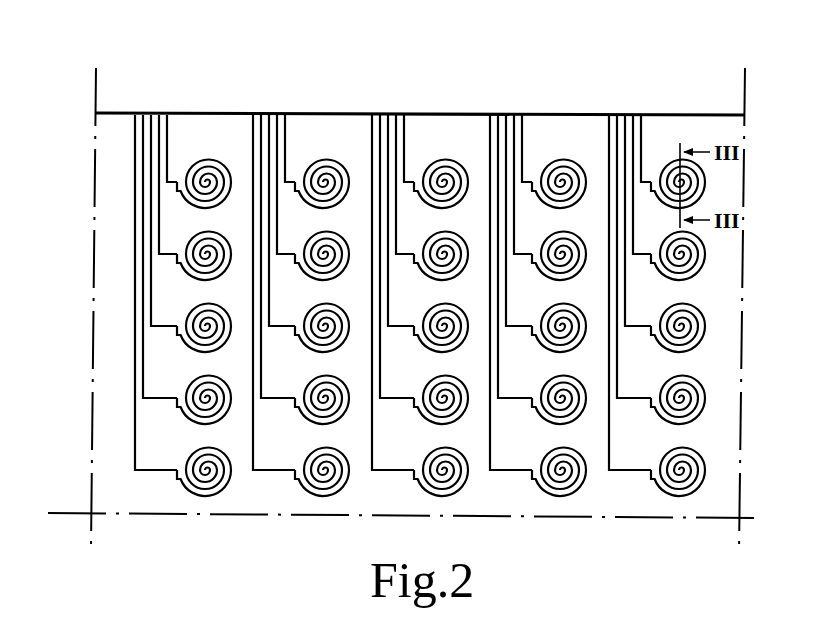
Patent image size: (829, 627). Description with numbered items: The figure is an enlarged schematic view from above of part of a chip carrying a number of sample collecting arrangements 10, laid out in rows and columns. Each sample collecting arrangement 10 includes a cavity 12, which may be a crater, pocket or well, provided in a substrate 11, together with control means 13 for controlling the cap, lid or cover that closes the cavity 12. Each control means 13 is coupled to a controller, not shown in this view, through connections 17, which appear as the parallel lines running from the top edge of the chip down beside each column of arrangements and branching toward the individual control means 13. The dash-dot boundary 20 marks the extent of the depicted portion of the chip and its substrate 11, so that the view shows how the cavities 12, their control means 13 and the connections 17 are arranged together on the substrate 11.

The sample collecting arrangement 10 is at (462, 147).
The substrate 11 is at (153, 488).
The cavity 12 is at (572, 177).
The control means 13 is at (432, 170).
The connections 17 is at (537, 128).
The substrate boundary 20 is at (106, 226).